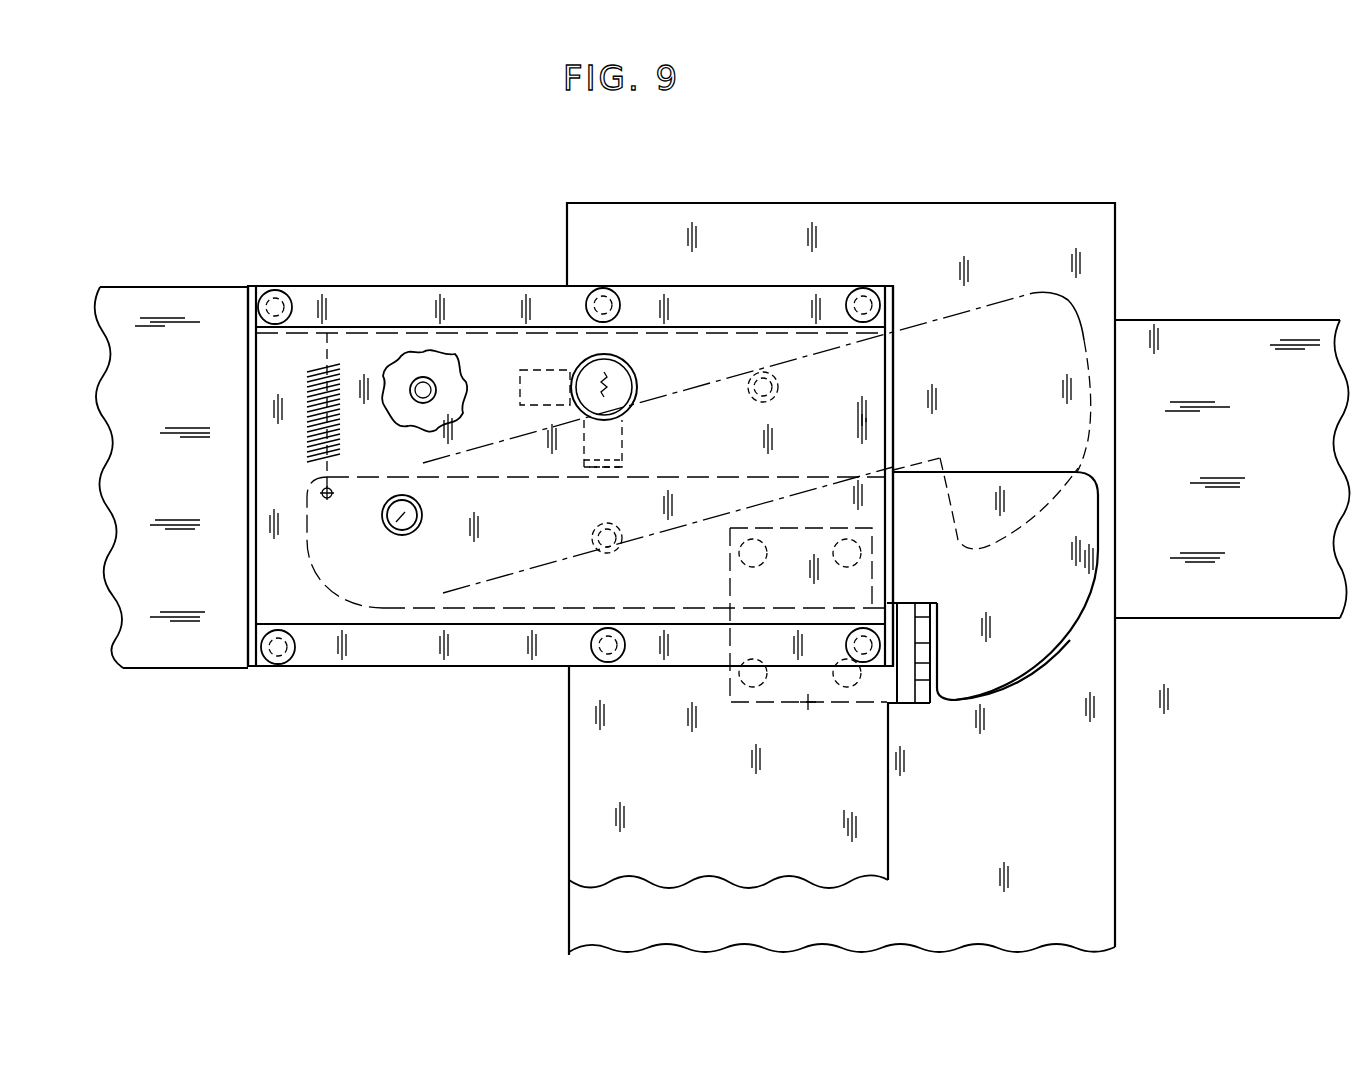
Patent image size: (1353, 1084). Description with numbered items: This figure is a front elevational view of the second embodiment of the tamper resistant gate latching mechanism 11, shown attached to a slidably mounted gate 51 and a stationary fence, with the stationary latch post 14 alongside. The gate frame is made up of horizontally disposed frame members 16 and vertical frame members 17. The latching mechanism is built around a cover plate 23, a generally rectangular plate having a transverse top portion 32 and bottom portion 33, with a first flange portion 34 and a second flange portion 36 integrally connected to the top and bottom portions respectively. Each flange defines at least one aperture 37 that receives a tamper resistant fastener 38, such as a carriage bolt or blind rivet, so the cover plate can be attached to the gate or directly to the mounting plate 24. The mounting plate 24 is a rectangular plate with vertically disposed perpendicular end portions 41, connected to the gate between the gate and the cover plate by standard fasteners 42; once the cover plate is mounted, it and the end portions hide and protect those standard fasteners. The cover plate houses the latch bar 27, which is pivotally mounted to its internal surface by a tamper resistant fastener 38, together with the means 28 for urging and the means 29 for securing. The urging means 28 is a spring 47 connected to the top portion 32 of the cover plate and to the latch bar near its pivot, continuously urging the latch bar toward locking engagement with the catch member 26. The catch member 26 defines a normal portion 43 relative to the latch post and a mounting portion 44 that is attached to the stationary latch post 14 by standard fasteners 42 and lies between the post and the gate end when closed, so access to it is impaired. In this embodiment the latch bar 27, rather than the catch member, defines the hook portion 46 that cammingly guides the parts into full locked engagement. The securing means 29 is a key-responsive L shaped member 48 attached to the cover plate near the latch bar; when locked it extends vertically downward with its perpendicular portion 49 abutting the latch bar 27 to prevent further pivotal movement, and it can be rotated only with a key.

The tamper resistant gate latching mechanism 11 is at (417, 655).
The stationary latch post 14 is at (742, 232).
The horizontally disposed frame members 16 is at (180, 642).
The vertical frame members 17 is at (600, 835).
The cover plate 23 is at (283, 561).
The mounting plate 24 is at (452, 391).
The catch member 26 is at (913, 708).
The latch bar 27 is at (1004, 691).
The means for urging 28 is at (303, 386).
The means for securing 29 is at (630, 382).
The top portion 32 is at (363, 327).
The bottom portion 33 is at (453, 627).
The first flange portion 34 is at (422, 303).
The second flange portion 36 is at (498, 647).
The aperture 37 is at (290, 312).
The tamper resistant fastener 38 is at (268, 302).
The perpendicular end portions 41 is at (247, 317).
The standard fasteners 42 is at (416, 398).
The normal portion 43 is at (923, 707).
The mounting portion 44 is at (808, 706).
The hook portion 46 is at (952, 683).
The spring 47 is at (310, 423).
The "L" shaped member 48 is at (613, 430).
The perpendicular portion 49 is at (620, 463).
The slidably mounted gate 51 is at (133, 296).